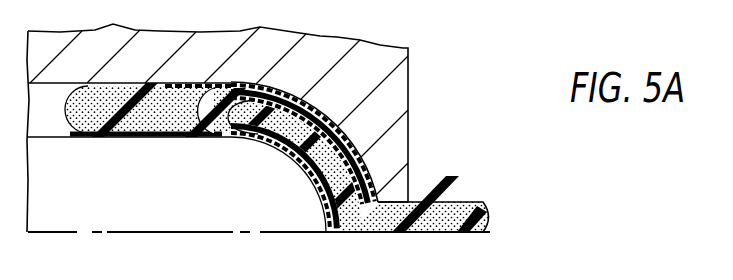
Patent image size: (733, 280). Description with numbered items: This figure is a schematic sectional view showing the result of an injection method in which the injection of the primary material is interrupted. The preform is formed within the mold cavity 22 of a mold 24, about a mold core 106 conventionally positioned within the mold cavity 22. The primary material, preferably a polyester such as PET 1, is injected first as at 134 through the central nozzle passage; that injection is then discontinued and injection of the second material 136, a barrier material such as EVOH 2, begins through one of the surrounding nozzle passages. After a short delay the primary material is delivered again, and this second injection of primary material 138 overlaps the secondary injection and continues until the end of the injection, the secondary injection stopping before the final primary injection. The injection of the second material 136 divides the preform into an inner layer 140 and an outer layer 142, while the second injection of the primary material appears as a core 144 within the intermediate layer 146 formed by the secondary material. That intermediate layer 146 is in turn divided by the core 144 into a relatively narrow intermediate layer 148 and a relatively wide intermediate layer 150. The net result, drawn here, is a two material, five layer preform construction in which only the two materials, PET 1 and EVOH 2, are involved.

The PET primary material 1 is at (493, 234).
The EVOH secondary material 2 is at (447, 172).
The mold cavity 22 is at (57, 109).
The mold 24 is at (410, 76).
The mold core 106 is at (174, 212).
The primary material first injection 134 is at (137, 88).
The second material 136 is at (436, 172).
The second injection of primary material 138 is at (456, 226).
The inner layer 140 is at (278, 150).
The outer layer 142 is at (329, 112).
The core 144 is at (349, 128).
The intermediate layer 146 is at (199, 113).
The relatively narrow intermediate layer 148 is at (316, 197).
The relatively wide intermediate layer 150 is at (285, 89).